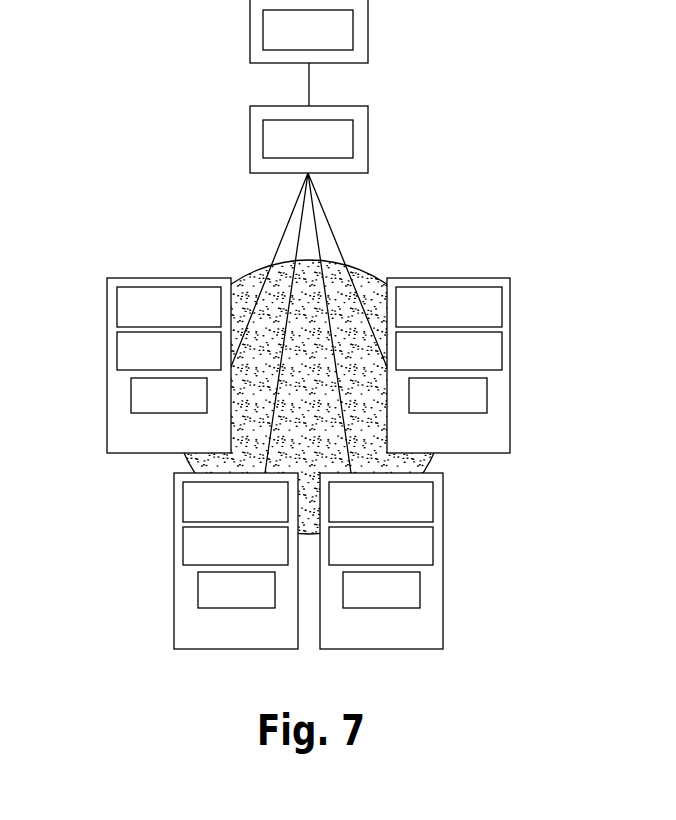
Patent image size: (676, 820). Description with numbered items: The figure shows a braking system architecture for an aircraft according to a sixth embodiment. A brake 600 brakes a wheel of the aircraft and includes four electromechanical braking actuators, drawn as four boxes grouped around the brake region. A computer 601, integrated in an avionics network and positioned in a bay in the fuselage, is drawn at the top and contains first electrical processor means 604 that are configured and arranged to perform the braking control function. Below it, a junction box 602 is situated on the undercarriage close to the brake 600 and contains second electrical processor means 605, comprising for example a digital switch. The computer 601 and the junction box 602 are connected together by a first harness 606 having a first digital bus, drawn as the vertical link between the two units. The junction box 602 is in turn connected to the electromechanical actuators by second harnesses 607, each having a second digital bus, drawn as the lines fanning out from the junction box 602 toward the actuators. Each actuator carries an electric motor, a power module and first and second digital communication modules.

The brake 600 is at (372, 275).
The computer 601 is at (368, 33).
The junction box 602 is at (368, 133).
The first electrical processor means 604 is at (263, 27).
The second electrical processor means 605 is at (263, 140).
The first harness 606 is at (309, 83).
The second harness 607 is at (259, 290).